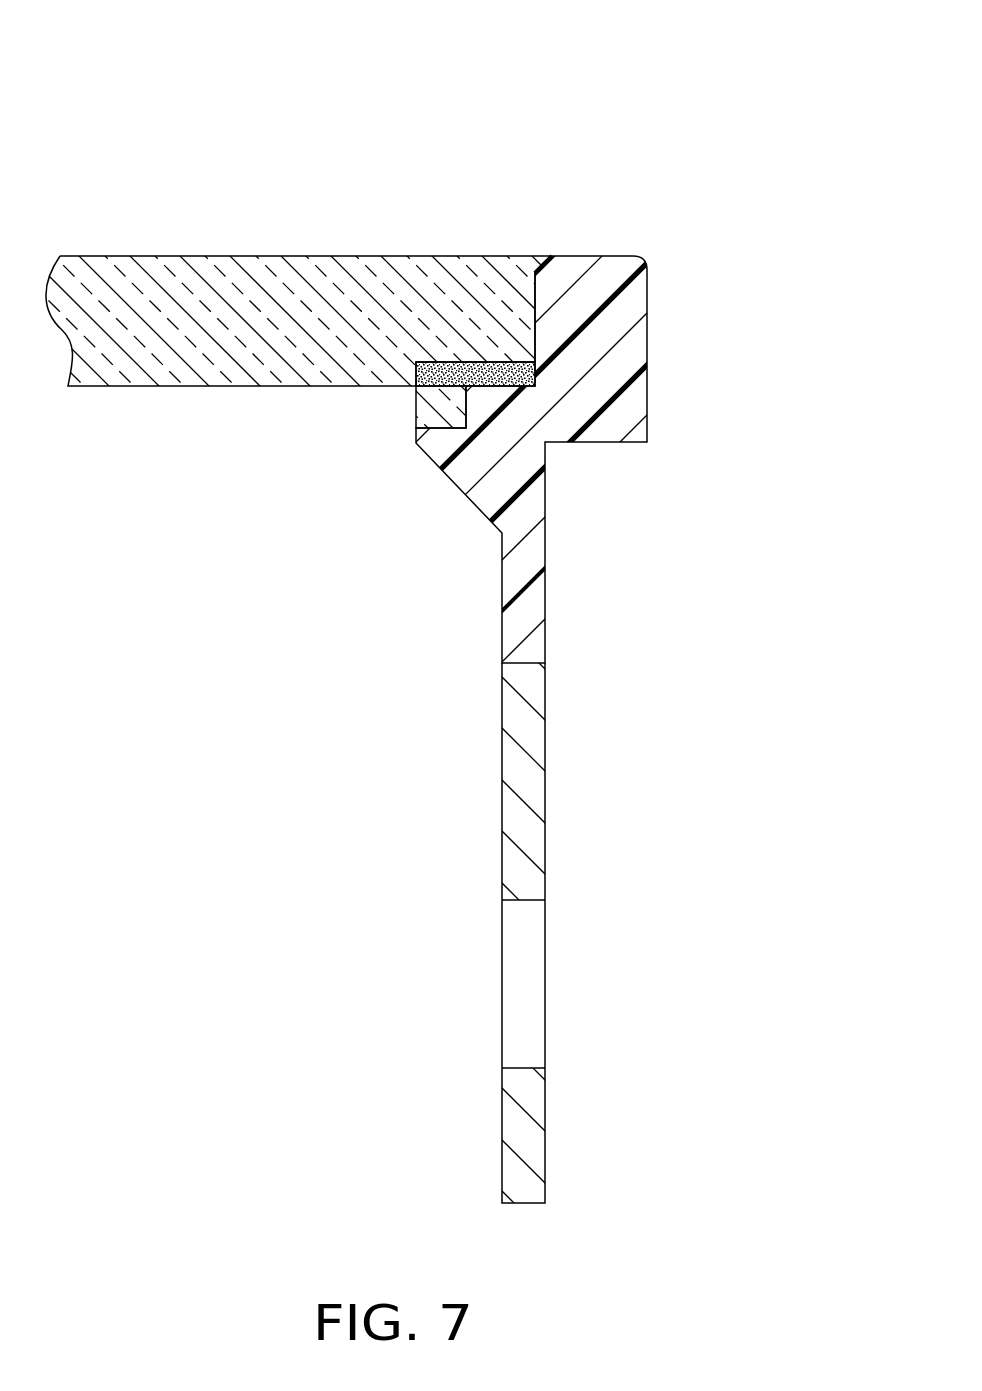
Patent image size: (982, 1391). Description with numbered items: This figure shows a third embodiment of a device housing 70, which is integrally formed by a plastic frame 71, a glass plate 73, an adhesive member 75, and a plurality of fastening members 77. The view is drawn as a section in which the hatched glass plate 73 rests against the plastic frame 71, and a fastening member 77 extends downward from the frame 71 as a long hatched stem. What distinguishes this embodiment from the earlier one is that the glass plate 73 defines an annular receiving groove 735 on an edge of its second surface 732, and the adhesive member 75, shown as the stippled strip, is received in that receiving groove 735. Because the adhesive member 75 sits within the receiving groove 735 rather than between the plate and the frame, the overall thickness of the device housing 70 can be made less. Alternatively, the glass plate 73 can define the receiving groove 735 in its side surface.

The device housing 70 is at (396, 54).
The plastic frame 71 is at (603, 330).
The glass plate 73 is at (197, 288).
The second surface 732 is at (241, 386).
The receiving groove 735 is at (471, 363).
The adhesive member 75 is at (537, 382).
The fastening members 77 is at (518, 827).